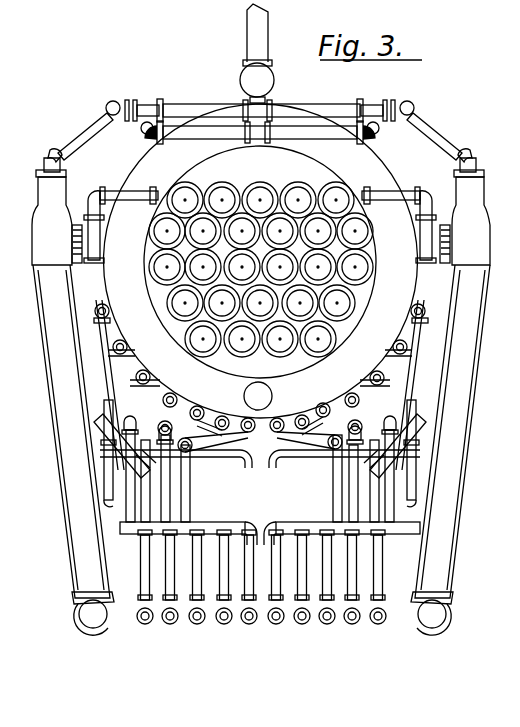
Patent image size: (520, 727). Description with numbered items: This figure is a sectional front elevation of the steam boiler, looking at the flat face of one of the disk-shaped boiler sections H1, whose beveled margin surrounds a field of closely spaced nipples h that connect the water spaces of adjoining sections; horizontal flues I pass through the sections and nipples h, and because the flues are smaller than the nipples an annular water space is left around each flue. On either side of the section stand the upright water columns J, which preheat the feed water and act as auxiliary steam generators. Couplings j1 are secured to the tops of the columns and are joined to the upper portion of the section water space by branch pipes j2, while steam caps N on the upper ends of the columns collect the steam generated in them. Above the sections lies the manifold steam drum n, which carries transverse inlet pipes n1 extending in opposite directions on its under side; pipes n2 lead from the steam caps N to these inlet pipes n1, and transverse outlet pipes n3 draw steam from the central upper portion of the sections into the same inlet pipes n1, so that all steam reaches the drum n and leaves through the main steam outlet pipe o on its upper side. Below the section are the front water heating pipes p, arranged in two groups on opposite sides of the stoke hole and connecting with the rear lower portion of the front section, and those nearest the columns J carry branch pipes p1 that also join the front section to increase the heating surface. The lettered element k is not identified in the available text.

The main steam outlet pipe o is at (250, 35).
The manifold steam drum n is at (257, 83).
The transverse inlet pipe n1 is at (205, 112).
The transverse steam outlet pipe n3 is at (260, 138).
The connecting pipe n2 is at (84, 133).
The coupling j1 is at (40, 218).
The steam cap N is at (257, 195).
The branch pipe j2 is at (142, 190).
The water column J is at (250, 450).
The intermediate boiler section H1 is at (372, 300).
The nipple h is at (285, 192).
The horizontal flue I is at (251, 285).
The central pipe k is at (258, 396).
The branch pipe p1 is at (97, 358).
The front water heating pipe p is at (260, 512).